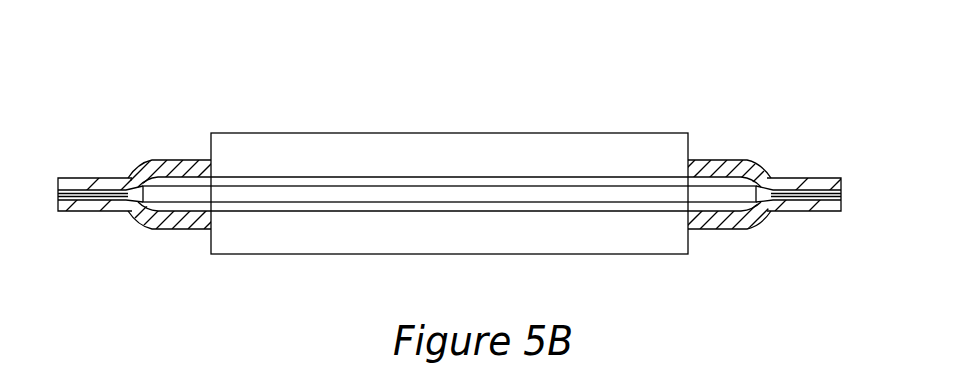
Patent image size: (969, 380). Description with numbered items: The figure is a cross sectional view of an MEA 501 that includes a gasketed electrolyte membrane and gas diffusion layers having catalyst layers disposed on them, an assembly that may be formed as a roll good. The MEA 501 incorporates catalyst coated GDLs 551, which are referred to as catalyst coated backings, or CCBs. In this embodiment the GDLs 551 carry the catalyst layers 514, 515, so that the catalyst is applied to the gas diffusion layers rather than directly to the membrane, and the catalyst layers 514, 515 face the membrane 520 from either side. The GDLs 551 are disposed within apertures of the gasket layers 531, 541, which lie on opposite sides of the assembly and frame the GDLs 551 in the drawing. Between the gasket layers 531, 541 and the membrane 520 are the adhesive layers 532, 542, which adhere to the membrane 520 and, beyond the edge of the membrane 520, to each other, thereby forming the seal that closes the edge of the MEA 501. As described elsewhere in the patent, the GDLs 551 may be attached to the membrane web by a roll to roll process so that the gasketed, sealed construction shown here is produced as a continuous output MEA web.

The MEA 501 is at (287, 70).
The catalyst layer 514 is at (350, 186).
The catalyst layer 515 is at (340, 212).
The membrane 520 is at (436, 200).
The gasket layer 531 is at (164, 164).
The adhesive layer 532 is at (132, 180).
The gasket layer 541 is at (172, 225).
The adhesive layer 542 is at (132, 212).
The catalyst coated GDLs 551 is at (520, 143).